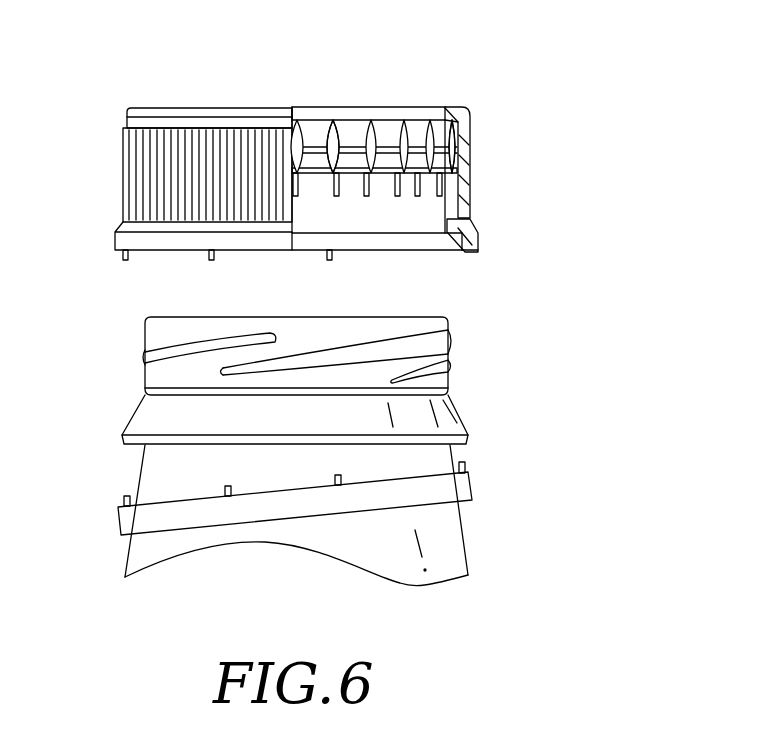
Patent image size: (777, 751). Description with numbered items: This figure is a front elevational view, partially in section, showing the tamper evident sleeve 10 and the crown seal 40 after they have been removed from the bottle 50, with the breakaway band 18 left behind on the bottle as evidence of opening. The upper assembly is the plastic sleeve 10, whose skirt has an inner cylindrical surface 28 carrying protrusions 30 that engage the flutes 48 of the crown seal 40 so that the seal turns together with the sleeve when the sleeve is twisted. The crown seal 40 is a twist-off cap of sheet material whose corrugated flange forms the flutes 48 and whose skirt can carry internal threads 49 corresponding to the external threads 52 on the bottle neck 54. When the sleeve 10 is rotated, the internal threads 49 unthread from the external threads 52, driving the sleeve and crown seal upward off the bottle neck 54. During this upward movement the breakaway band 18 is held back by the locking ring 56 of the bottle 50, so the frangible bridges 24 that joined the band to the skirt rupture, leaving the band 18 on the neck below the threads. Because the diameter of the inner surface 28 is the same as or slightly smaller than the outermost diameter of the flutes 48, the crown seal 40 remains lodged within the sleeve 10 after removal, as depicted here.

The tamper evident sleeve 10 is at (264, 94).
The crown seal 40 is at (388, 125).
The internal threads 49 is at (447, 150).
The flutes 48 is at (332, 165).
The protrusions 30 is at (456, 190).
The inner cylindrical surface 28 is at (452, 238).
The frangible bridges 24 is at (466, 252).
The external threads 52 is at (449, 331).
The bottle 50 is at (482, 367).
The bottle neck 54 is at (145, 390).
The locking ring 56 is at (128, 417).
The breakaway band 18 is at (472, 478).